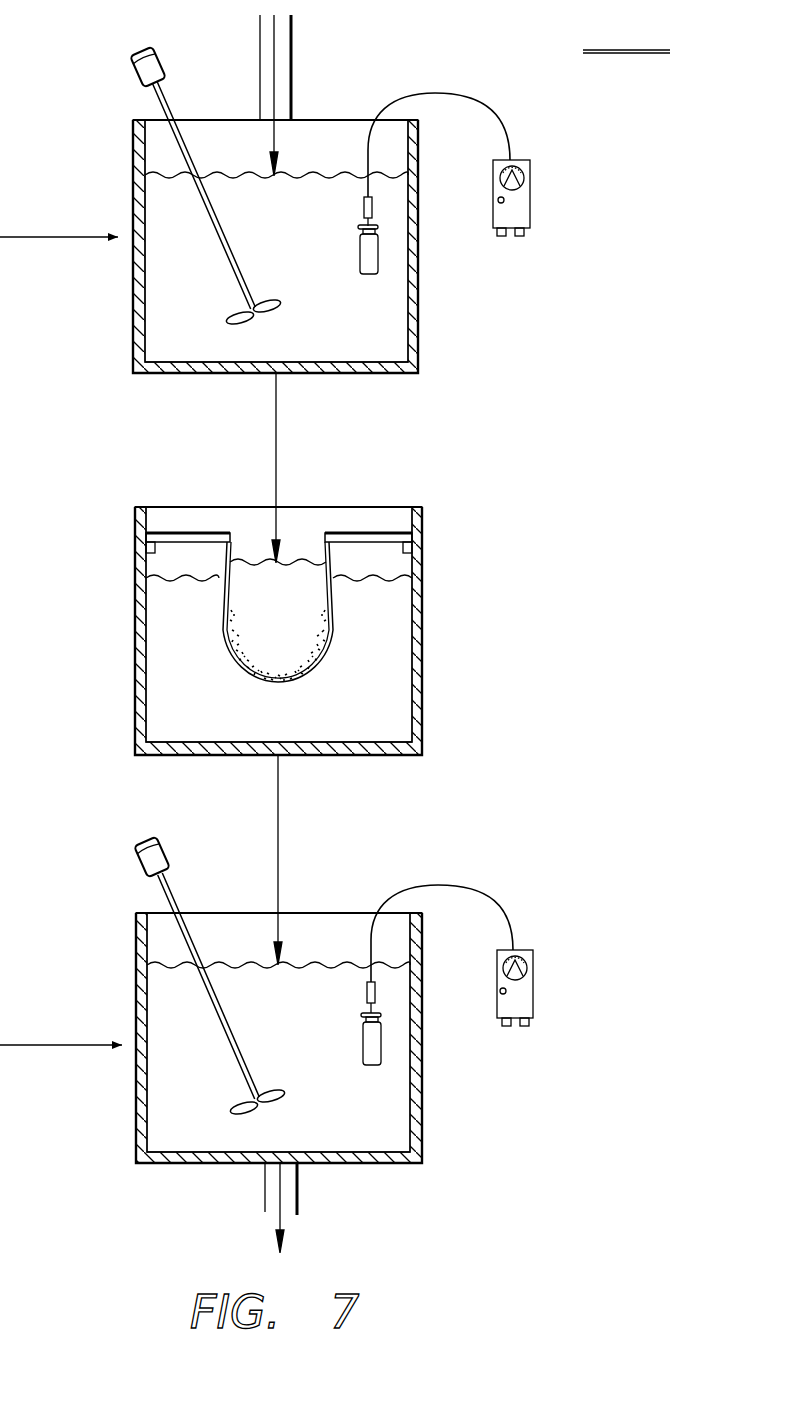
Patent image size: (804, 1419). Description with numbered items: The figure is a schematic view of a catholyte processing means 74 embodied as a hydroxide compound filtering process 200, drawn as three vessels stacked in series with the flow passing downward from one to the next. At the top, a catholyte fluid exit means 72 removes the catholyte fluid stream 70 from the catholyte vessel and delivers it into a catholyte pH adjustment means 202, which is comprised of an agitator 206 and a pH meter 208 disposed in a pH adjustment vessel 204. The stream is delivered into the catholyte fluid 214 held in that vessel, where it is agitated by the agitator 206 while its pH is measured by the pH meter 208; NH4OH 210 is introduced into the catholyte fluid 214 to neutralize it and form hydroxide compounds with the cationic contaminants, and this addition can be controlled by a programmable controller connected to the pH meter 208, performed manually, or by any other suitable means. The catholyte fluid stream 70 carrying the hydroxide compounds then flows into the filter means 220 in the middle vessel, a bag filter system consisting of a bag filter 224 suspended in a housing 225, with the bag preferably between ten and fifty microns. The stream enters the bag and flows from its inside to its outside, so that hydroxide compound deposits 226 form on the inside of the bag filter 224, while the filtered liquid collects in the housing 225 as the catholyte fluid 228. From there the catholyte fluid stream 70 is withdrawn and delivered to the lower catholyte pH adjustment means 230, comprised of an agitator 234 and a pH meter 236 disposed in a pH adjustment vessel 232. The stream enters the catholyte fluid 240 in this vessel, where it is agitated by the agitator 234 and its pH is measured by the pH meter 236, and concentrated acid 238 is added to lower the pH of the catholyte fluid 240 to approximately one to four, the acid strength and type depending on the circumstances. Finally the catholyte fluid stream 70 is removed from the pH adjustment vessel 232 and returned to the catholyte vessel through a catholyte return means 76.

The catholyte processing means 74 is at (599, 38).
The hydroxide compound filtering process 200 is at (640, 38).
The catholyte pH adjustment means 202 is at (432, 311).
The pH adjustment vessel 204 is at (420, 362).
The agitator 206 is at (140, 50).
The pH meter 208 is at (530, 205).
The NH4OH 210 is at (59, 222).
The catholyte fluid 214 is at (304, 176).
The catholyte fluid stream 70 is at (291, 72).
The catholyte fluid exit means 72 is at (260, 42).
The catholyte return means 76 is at (297, 1195).
The filter means 220 is at (432, 540).
The bag filter 224 is at (333, 627).
The housing 225 is at (422, 678).
The hydroxide compound deposits 226 is at (223, 667).
The catholyte fluid 228 is at (185, 562).
The catholyte pH adjustment means 230 is at (432, 1077).
The pH adjustment vessel 232 is at (422, 1130).
The agitator 234 is at (170, 848).
The pH meter 236 is at (533, 990).
The concentrated acid 238 is at (61, 1030).
The catholyte fluid 240 is at (308, 965).